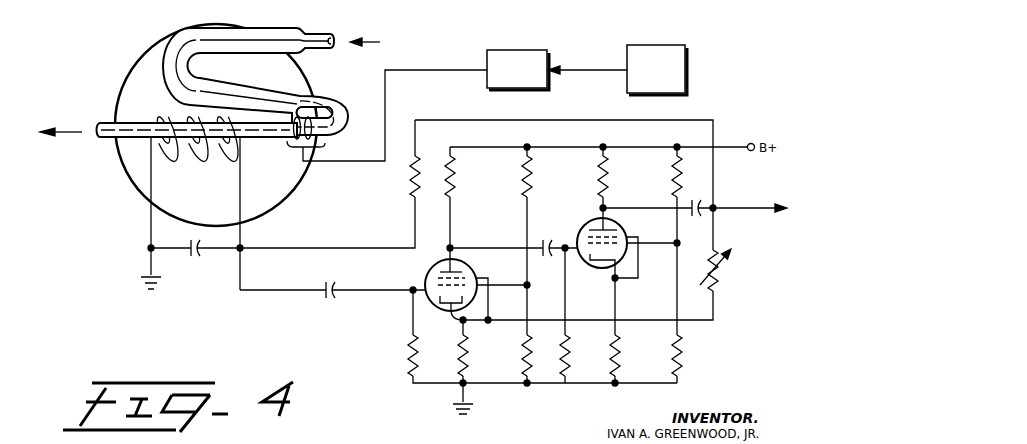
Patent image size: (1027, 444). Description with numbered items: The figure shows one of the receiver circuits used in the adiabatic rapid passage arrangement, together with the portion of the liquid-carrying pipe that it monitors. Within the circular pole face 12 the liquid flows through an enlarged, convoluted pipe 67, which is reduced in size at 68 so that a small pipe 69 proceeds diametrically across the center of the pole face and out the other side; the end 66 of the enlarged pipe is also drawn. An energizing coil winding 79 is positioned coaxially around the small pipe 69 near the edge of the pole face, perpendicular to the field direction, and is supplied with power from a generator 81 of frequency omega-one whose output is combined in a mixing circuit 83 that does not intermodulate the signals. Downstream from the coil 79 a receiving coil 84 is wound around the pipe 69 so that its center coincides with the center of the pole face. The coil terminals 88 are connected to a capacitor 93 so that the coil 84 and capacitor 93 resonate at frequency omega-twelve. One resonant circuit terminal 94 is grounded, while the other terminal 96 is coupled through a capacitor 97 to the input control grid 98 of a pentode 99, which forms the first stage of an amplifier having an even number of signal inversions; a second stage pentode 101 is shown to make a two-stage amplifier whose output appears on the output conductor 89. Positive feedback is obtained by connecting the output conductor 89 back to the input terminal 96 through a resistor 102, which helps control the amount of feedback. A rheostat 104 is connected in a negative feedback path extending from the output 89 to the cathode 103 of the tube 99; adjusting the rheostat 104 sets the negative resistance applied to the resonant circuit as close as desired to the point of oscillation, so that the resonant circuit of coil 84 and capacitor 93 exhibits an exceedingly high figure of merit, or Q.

The pole face 12 is at (142, 55).
The enlarged pipe 67 is at (240, 77).
The inlet end of tube 66 is at (321, 48).
The pipe reduction 68 is at (306, 95).
The receiving coil 84 is at (223, 90).
The small pipe 69 is at (258, 138).
The energizing coil winding 79 is at (325, 145).
The coil terminals 88 is at (240, 176).
The resonant circuit terminal 94 is at (150, 248).
The capacitor 93 is at (200, 259).
The input terminal 96 is at (247, 251).
The capacitor 97 is at (325, 296).
The mixing circuit 83 is at (546, 50).
The generator 81 is at (686, 47).
The resistor 102 is at (410, 190).
The input control grid 98 is at (433, 287).
The pentode 99 is at (470, 267).
The cathode 103 is at (463, 320).
The second stage pentode 101 is at (580, 230).
The output conductor 89 is at (757, 210).
The rheostat 104 is at (720, 272).